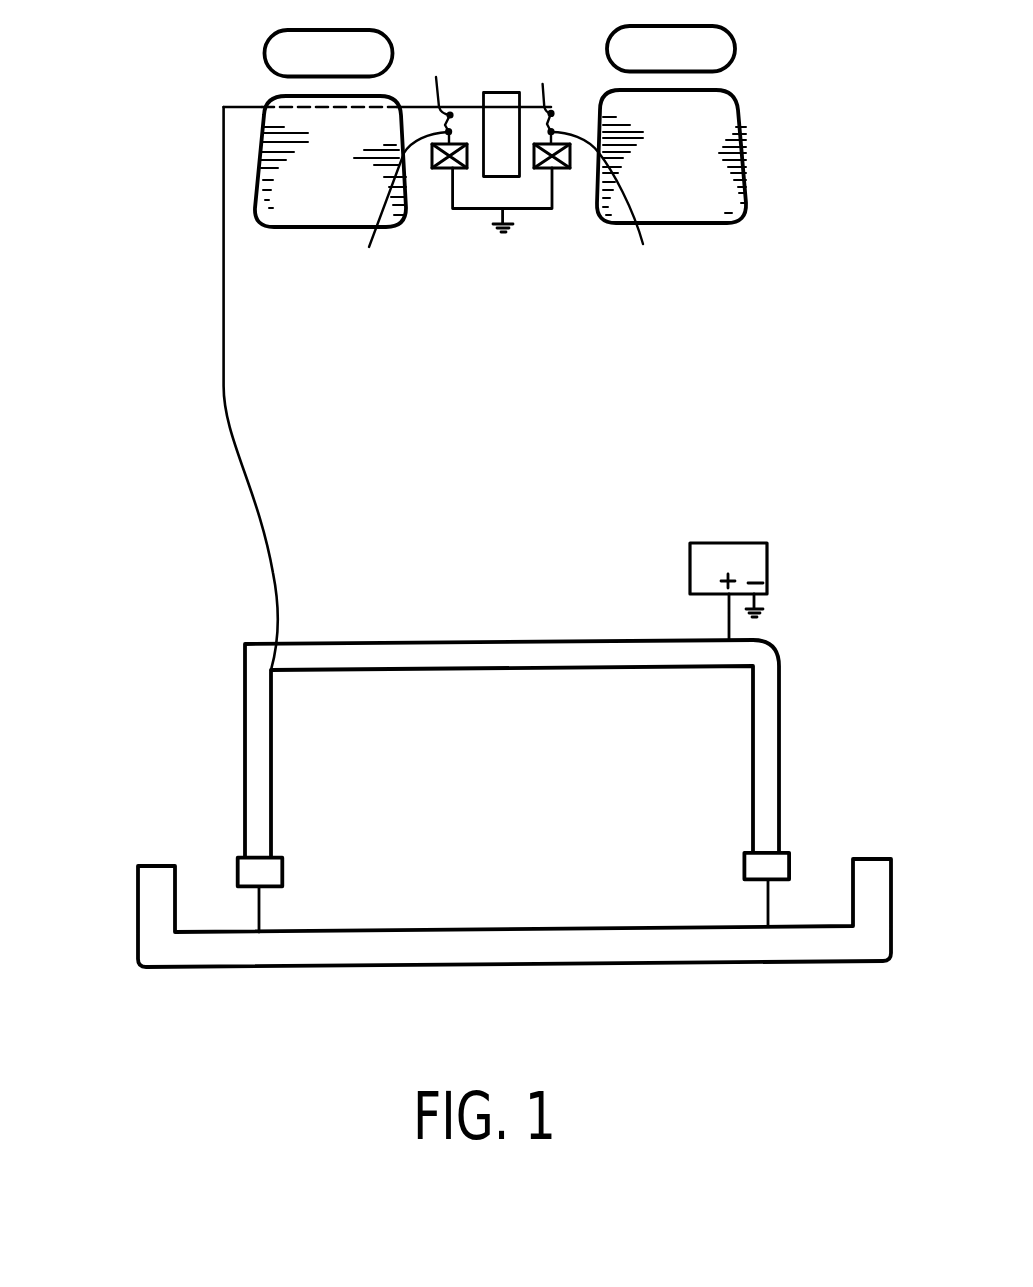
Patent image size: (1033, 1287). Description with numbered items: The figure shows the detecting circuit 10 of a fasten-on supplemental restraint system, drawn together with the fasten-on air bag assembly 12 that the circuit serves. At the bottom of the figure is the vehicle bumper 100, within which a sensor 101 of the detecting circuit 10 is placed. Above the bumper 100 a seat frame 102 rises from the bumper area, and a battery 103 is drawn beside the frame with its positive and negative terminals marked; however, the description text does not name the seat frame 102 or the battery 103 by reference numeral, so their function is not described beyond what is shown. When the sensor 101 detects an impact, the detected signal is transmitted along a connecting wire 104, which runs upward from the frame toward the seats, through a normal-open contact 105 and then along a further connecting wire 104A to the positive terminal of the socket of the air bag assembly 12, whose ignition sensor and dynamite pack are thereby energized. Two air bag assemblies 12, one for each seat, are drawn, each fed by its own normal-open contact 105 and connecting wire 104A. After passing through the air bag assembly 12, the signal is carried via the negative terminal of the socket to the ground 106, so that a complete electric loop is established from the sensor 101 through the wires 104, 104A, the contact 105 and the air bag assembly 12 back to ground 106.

The detecting circuit 10 is at (196, 441).
The air bag assembly 12 is at (553, 162).
The bumper 100 is at (138, 883).
The sensor 101 is at (736, 858).
The seat frame 102 is at (235, 708).
The battery 103 is at (691, 553).
The connecting wire 104 is at (216, 249).
The connecting wire 104A is at (520, 210).
The normal-open contact 105 is at (492, 90).
The ground 106 is at (465, 204).